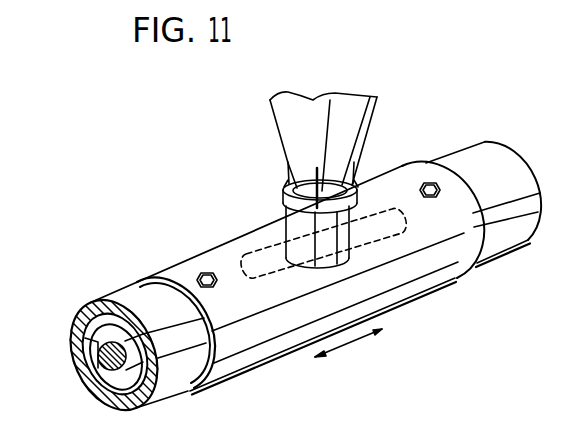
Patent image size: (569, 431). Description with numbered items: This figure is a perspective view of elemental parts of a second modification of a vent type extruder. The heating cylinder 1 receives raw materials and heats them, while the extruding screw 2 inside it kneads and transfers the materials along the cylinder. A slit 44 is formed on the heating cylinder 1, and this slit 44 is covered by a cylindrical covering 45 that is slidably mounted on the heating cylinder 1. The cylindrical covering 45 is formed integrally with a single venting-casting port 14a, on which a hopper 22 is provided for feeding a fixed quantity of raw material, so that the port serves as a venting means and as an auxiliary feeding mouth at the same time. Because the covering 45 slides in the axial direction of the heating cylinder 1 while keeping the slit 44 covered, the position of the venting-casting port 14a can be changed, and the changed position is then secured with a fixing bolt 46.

The heating cylinder 1 is at (173, 378).
The extruding screw 2 is at (104, 372).
The venting-casting port 14a is at (304, 223).
The hopper 22 is at (363, 112).
The slit 44 is at (388, 232).
The cylindrical covering 45 is at (179, 272).
The fixing bolt 46 is at (434, 184).